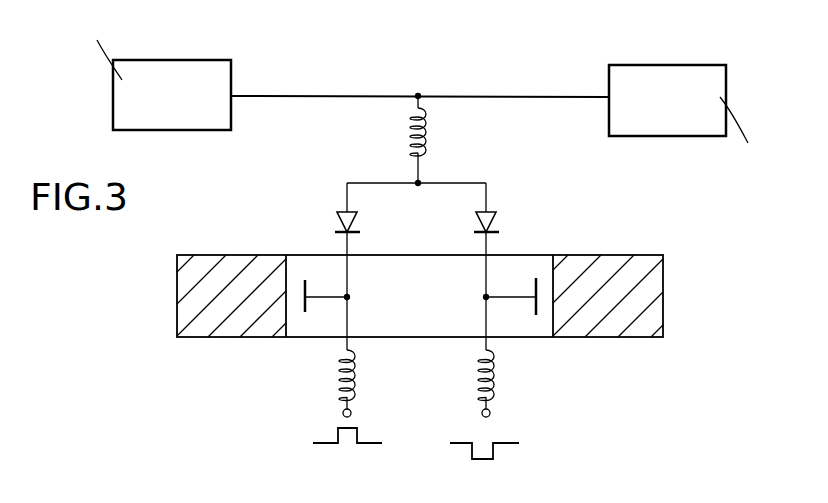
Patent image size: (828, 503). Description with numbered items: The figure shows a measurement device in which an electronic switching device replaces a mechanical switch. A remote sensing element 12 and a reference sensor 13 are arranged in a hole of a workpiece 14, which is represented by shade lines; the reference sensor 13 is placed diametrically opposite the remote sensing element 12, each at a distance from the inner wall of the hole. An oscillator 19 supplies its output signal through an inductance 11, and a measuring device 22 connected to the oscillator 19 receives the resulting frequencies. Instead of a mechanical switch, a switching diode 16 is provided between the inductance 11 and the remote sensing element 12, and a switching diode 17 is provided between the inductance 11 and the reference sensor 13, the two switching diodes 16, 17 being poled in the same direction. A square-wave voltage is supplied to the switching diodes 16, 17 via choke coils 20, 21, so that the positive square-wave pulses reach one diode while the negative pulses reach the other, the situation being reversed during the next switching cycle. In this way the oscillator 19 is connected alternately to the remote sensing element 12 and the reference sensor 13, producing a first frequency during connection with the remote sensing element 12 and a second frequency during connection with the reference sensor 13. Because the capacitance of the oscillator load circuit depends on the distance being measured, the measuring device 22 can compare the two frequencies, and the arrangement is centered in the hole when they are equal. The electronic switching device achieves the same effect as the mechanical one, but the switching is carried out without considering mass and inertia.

The inductance 11 is at (425, 148).
The remote sensing element 12 is at (306, 312).
The reference sensor 13 is at (534, 306).
The workpiece 14 is at (262, 303).
The switching diode 16 is at (337, 223).
The switching diode 17 is at (496, 223).
The oscillator 19 is at (217, 82).
The choke coil 20 is at (338, 367).
The choke coil 21 is at (495, 377).
The measuring device 22 is at (642, 80).